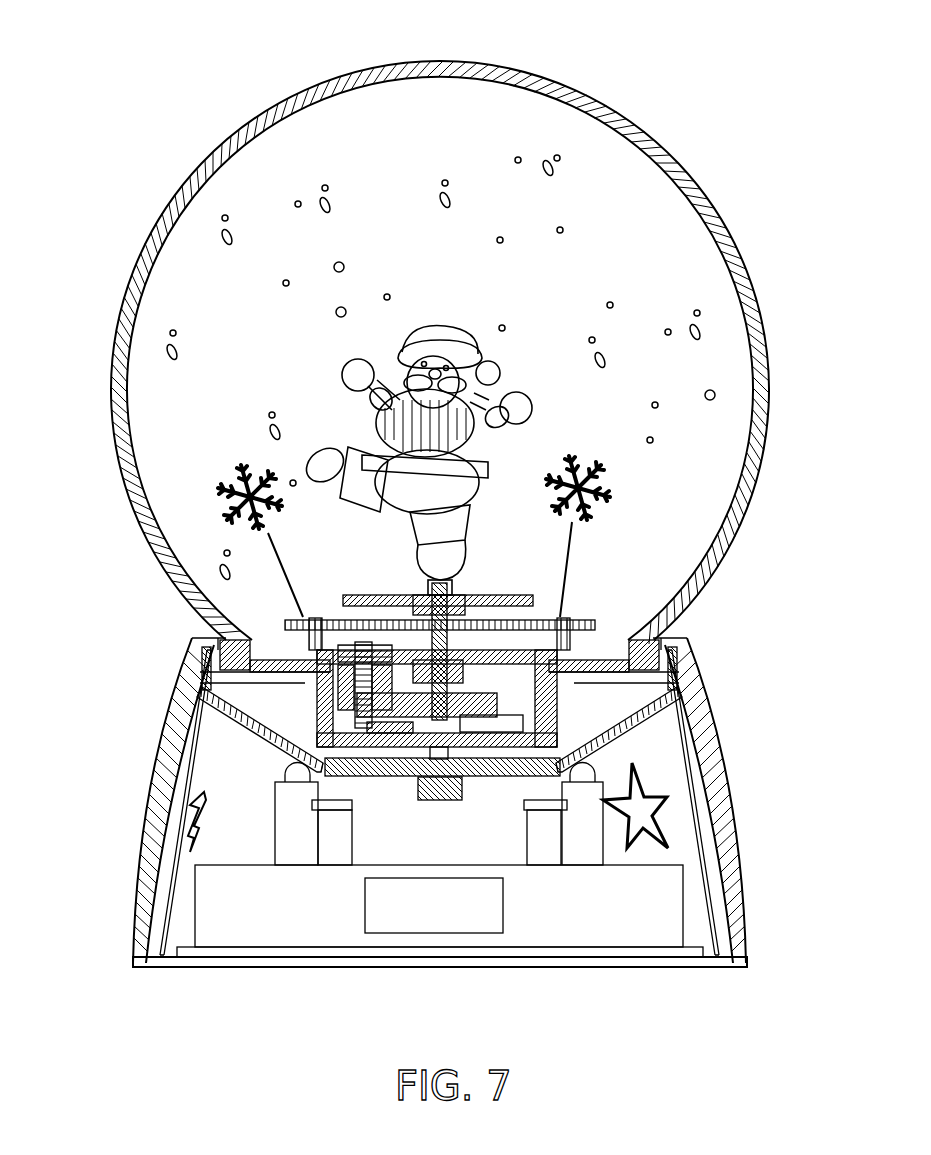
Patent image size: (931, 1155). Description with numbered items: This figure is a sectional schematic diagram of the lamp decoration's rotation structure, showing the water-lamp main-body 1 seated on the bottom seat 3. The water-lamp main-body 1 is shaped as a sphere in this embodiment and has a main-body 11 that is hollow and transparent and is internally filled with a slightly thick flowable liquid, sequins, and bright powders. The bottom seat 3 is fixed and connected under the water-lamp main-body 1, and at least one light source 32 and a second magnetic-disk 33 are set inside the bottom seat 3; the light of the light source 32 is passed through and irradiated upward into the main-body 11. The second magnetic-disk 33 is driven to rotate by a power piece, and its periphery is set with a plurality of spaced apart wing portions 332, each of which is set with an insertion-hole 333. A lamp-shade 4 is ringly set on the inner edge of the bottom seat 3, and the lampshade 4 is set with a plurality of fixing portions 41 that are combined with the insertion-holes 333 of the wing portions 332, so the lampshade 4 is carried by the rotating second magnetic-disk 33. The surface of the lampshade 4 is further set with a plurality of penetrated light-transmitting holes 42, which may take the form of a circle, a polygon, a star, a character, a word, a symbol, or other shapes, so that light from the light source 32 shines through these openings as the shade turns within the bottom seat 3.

The water-lamp main-body 1 is at (185, 68).
The main-body 11 is at (700, 191).
The bottom seat 3 is at (728, 837).
The lamp-shade 4 is at (172, 882).
The fixing portion 41 is at (197, 664).
The light-transmitting hole 42 is at (188, 803).
The light source 32 is at (590, 763).
The second magnetic-disk 33 is at (283, 768).
The wing portion 332 is at (630, 710).
The insertion-hole 333 is at (178, 687).